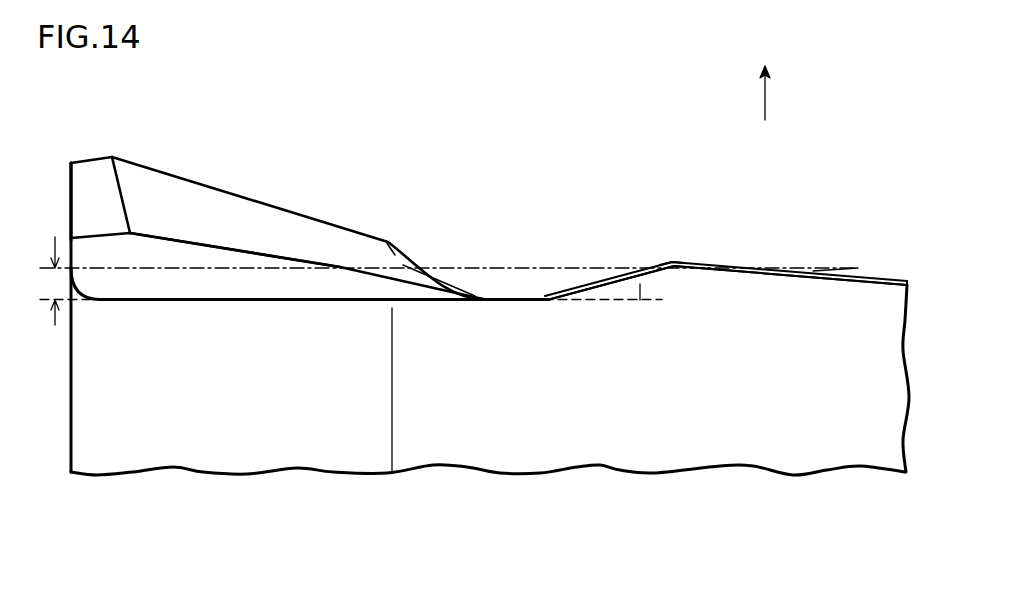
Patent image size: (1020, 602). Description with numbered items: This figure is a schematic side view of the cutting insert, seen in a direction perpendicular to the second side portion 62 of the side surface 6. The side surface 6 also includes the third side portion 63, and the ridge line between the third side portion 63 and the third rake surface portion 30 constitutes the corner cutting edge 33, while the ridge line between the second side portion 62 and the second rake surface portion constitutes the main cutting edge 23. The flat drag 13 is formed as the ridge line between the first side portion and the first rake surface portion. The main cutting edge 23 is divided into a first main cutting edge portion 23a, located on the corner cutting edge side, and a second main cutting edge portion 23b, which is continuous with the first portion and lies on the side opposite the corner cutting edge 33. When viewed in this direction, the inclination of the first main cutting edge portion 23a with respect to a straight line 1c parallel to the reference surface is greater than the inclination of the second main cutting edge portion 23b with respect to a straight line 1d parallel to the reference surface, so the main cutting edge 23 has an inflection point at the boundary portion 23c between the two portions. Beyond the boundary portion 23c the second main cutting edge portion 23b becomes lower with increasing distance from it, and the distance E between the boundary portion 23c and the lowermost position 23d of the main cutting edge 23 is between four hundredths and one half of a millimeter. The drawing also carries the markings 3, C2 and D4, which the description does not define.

The blade edge portion 3 is at (633, 107).
The flat drag 13 is at (63, 168).
The corner cutting edge 33 is at (213, 299).
The center line C2 is at (393, 299).
The main cutting edge 23 is at (715, 142).
The first main cutting edge portion 23a is at (621, 274).
The second main cutting edge portion 23b is at (733, 270).
The boundary portion 23c is at (667, 262).
The lowermost position 23d is at (510, 299).
The straight line 1d is at (853, 268).
The straight line 1c is at (602, 300).
The distance E is at (47, 281).
The direction D4 is at (768, 105).
The side surface 6 is at (468, 513).
The second side portion 62 is at (457, 408).
The third side portion 63 is at (330, 412).
The third rake surface portion 30 is at (173, 300).